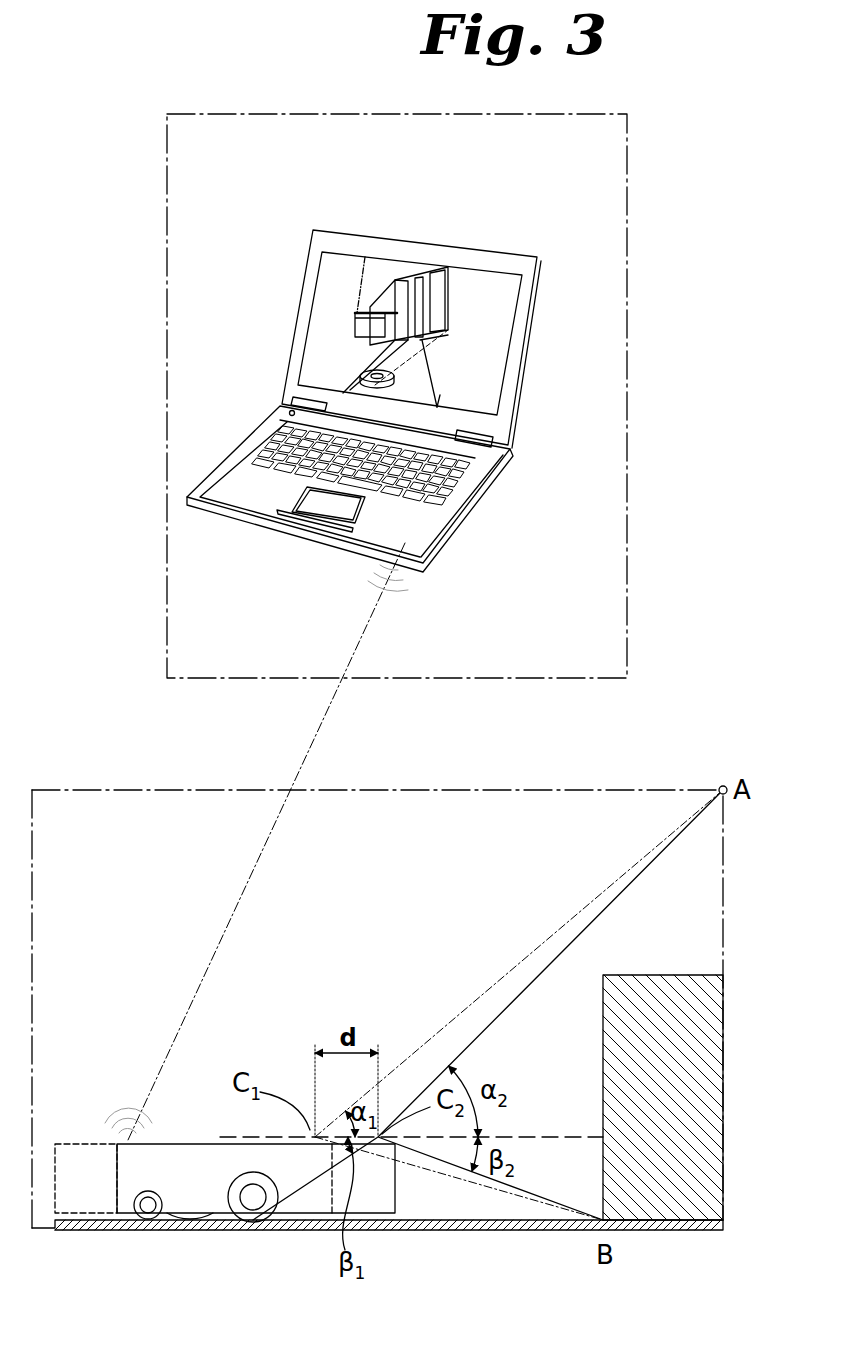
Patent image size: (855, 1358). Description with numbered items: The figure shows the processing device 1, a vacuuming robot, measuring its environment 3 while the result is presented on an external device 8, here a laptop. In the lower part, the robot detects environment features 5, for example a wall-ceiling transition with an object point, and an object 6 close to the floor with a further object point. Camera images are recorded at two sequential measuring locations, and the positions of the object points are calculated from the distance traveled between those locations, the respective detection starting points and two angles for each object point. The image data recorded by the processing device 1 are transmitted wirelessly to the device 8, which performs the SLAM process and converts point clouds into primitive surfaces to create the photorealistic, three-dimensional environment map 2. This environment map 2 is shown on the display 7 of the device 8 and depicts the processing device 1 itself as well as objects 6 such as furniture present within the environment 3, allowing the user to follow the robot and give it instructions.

The processing device 1 is at (352, 365).
The environment map 2 is at (358, 311).
The environment 3 is at (428, 363).
The environment feature 5 is at (33, 792).
The object 6 is at (403, 287).
The display 7 is at (487, 313).
The device 8 is at (508, 433).